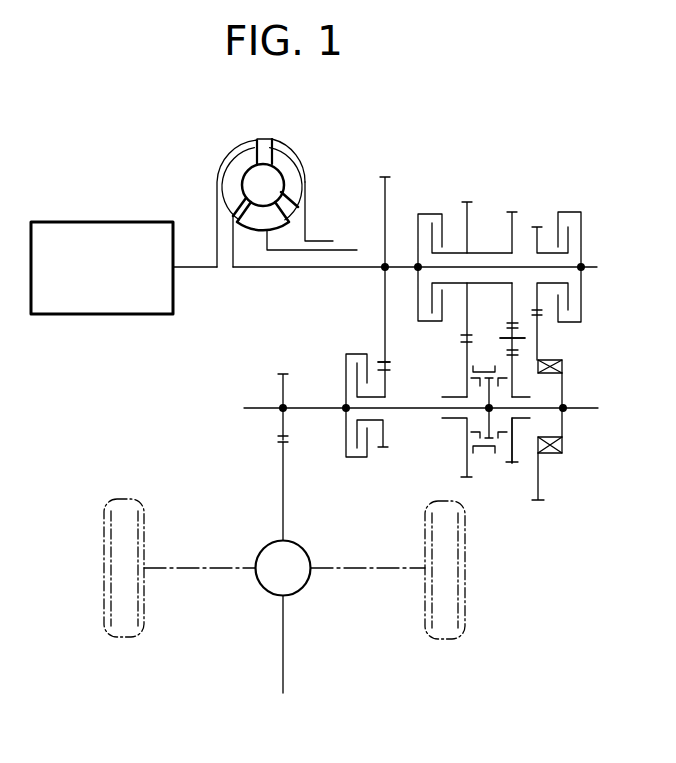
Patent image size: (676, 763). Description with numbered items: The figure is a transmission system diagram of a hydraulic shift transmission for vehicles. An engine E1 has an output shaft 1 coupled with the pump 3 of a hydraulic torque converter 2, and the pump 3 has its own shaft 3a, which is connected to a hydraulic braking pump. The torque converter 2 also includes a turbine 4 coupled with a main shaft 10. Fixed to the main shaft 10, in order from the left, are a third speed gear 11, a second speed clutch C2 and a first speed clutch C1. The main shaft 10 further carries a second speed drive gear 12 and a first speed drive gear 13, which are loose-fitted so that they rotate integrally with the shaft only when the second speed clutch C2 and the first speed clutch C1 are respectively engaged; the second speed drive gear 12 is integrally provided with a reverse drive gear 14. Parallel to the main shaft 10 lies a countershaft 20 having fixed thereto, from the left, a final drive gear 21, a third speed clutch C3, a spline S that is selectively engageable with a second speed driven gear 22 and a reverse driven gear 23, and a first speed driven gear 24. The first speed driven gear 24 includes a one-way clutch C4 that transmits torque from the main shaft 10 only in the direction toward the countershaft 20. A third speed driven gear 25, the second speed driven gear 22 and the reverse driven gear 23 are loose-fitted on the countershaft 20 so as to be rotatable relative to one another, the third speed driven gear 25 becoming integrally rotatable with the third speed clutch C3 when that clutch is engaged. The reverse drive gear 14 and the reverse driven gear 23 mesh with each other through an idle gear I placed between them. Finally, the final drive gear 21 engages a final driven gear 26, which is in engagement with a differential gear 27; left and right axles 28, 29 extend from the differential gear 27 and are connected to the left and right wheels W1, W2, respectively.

The engine E1 is at (95, 237).
The output shaft 1 is at (206, 270).
The hydraulic torque converter 2 is at (269, 182).
The pump 3 is at (292, 178).
The shaft 3a is at (302, 230).
The turbine 4 is at (233, 177).
The main shaft 10 is at (290, 270).
The third speed gear 11 is at (387, 190).
The second speed drive gear 12 is at (472, 212).
The first speed drive gear 13 is at (540, 226).
The reverse drive gear 14 is at (515, 212).
The first speed clutch C1 is at (573, 210).
The second speed clutch C2 is at (432, 212).
The third speed clutch C3 is at (352, 354).
The one-way clutch C4 is at (562, 441).
The countershaft 20 is at (255, 411).
The final drive gear 21 is at (284, 373).
The second speed driven gear 22 is at (465, 365).
The reverse driven gear 23 is at (512, 466).
The first speed driven gear 24 is at (541, 484).
The third speed driven gear 25 is at (386, 377).
The spline S is at (485, 416).
The idle gear I is at (513, 342).
The final driven gear 26 is at (284, 513).
The differential gear 27 is at (300, 583).
The left axle 28 is at (203, 570).
The right axle 29 is at (368, 569).
The left wheel W1 is at (106, 622).
The right wheel W2 is at (466, 626).